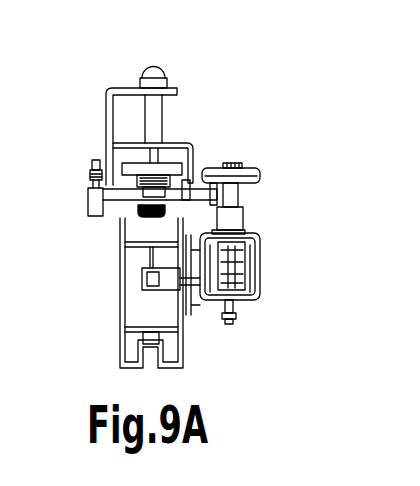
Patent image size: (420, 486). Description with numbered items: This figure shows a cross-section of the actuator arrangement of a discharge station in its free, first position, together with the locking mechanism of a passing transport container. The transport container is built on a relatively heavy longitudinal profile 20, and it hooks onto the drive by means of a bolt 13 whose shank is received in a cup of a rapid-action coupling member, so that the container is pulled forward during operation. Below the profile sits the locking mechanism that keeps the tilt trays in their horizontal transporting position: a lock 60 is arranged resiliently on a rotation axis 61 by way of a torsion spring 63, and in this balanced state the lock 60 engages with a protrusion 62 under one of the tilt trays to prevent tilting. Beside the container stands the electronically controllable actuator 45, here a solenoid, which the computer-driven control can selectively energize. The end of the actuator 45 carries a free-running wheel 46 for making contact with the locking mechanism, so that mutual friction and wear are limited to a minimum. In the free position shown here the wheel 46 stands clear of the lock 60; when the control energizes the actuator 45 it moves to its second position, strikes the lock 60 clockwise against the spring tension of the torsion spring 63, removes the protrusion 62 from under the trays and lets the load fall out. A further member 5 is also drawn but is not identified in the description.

The longitudinal profile 20 is at (106, 108).
The bolt 13 is at (158, 122).
The torsion spring 63 is at (168, 178).
The rotation axis 61 is at (106, 146).
The protrusion 62 is at (88, 207).
The free-running wheel 46 is at (258, 175).
The lock 60 is at (240, 200).
The actuator 45 is at (260, 272).
The rail 5 is at (120, 325).